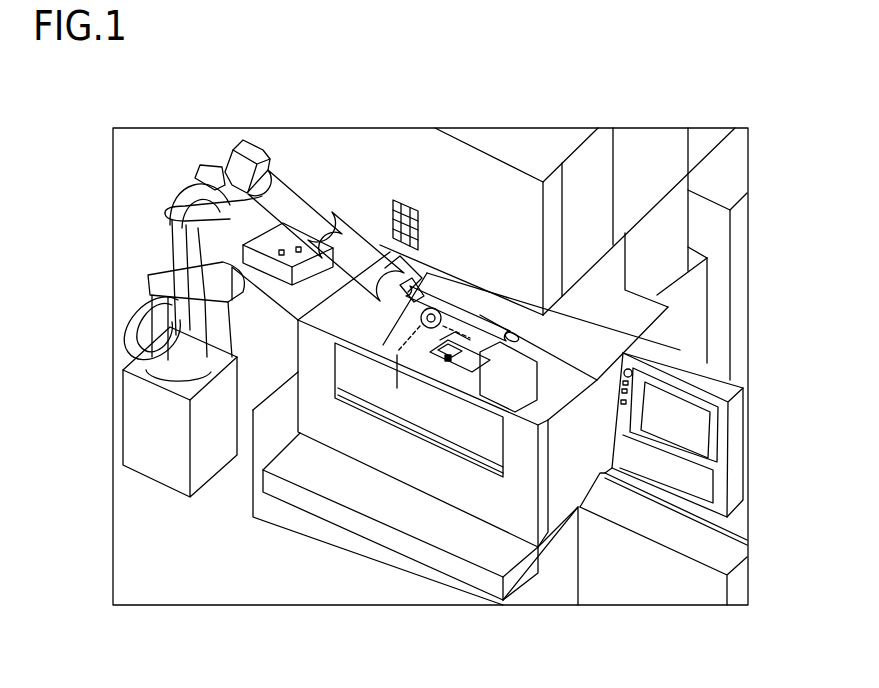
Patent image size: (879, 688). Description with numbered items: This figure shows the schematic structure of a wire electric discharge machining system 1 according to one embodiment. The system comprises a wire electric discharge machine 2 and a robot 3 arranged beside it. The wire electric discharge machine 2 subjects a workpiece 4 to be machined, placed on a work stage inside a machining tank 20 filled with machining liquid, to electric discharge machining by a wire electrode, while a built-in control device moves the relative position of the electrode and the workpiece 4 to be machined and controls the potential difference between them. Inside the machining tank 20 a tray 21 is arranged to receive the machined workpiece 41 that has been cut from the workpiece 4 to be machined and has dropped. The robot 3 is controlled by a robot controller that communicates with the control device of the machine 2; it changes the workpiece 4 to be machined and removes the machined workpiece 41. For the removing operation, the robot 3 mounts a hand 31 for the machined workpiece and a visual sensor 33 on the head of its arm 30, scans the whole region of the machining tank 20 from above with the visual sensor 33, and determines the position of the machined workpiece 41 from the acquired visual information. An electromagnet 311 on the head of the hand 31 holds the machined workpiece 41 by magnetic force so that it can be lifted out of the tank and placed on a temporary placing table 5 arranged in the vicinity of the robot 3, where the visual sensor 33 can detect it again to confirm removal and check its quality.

The wire electric discharge machining system 1 is at (129, 106).
The wire electric discharge machine 2 is at (590, 203).
The robot 3 is at (185, 183).
The workpiece to be machined 4 is at (537, 386).
The temporary placing table 5 is at (302, 262).
The machining tank 20 is at (342, 437).
The tray 21 is at (437, 355).
The arm 30 is at (329, 212).
The hand for the machined workpiece 31 is at (458, 307).
The electromagnet 311 is at (500, 337).
The visual sensor 33 is at (440, 330).
The machined workpiece 41 is at (448, 362).